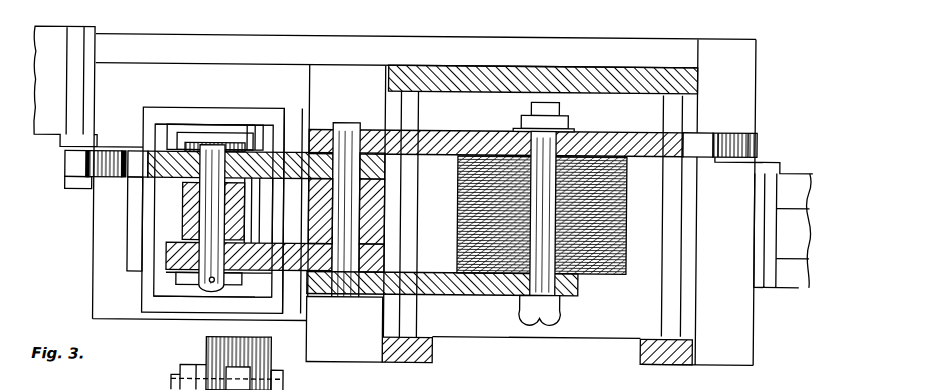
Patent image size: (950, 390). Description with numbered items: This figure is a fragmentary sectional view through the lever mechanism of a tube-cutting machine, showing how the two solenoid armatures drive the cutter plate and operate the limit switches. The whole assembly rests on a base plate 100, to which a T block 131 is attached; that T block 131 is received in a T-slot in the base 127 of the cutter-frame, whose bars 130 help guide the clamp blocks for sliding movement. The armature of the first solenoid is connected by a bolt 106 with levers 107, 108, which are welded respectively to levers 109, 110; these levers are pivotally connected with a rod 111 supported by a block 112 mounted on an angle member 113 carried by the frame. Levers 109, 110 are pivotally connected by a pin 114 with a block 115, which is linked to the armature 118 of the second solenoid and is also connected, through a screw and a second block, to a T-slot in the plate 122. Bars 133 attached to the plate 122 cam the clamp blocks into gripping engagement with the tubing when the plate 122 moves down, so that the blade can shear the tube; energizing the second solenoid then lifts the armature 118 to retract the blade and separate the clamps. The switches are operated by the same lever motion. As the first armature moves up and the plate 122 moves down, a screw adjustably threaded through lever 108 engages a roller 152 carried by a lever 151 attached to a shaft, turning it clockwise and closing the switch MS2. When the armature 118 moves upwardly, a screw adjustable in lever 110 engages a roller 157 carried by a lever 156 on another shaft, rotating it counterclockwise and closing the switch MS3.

The base plate 100 is at (93, 292).
The bolt 106 is at (527, 306).
The lever 107 is at (579, 285).
The lever 108 is at (637, 129).
The lever 109 is at (386, 253).
The lever 110 is at (387, 167).
The rod 111 is at (350, 122).
The block 112 is at (386, 201).
The angle member 113 is at (358, 350).
The pin 114 is at (213, 143).
The block 115 is at (182, 212).
The armature 118 is at (208, 352).
The plate 122 is at (250, 129).
The base 127 is at (144, 124).
The bars 130 is at (180, 115).
The T block 131 is at (128, 257).
The bars 133 is at (197, 130).
The lever 151 is at (776, 158).
The roller 152 is at (745, 131).
The lever 156 is at (87, 164).
The roller 157 is at (68, 180).
The switch MS2 is at (799, 279).
The switch MS3 is at (60, 28).